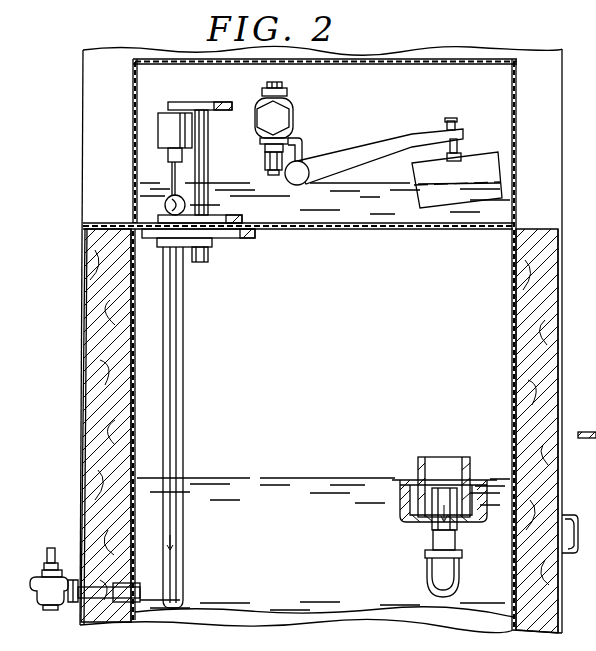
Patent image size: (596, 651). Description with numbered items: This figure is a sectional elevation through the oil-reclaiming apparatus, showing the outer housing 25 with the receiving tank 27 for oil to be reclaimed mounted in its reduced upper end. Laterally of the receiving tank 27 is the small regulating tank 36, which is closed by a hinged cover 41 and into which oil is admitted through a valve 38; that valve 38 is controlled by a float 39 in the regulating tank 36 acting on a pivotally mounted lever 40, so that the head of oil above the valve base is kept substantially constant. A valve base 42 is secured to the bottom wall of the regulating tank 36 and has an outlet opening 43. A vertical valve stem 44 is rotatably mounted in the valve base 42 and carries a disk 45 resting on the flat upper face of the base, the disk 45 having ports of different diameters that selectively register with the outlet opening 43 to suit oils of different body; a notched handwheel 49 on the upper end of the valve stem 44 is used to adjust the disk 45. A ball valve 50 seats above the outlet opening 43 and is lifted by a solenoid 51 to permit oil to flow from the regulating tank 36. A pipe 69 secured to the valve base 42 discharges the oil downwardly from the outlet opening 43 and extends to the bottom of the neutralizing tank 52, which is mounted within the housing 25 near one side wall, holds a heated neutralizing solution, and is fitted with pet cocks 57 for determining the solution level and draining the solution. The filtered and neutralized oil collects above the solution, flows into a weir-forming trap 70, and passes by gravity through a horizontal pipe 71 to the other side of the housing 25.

The outer housing 25 is at (82, 335).
The receiving tank 27 is at (101, 108).
The regulating tank 36 is at (492, 88).
The valve 38 is at (280, 112).
The float 39 is at (474, 172).
The pivotally mounted lever 40 is at (391, 145).
The hinged cover 41 is at (480, 64).
The valve base 42 is at (238, 238).
The outlet opening 43 is at (579, 492).
The vertical valve stem 44 is at (198, 153).
The disk 45 is at (227, 218).
The notched handwheel 49 is at (232, 103).
The ball valve 50 is at (170, 203).
The solenoid 51 is at (170, 131).
The neutralizing tank 52 is at (493, 307).
The pet cock 57 is at (52, 611).
The pipe 69 is at (172, 445).
The weir-forming trap 70 is at (400, 497).
The horizontal pipe 71 is at (426, 589).